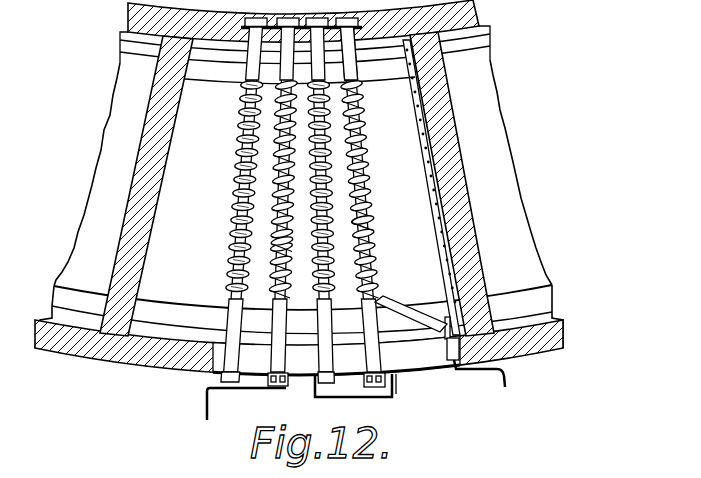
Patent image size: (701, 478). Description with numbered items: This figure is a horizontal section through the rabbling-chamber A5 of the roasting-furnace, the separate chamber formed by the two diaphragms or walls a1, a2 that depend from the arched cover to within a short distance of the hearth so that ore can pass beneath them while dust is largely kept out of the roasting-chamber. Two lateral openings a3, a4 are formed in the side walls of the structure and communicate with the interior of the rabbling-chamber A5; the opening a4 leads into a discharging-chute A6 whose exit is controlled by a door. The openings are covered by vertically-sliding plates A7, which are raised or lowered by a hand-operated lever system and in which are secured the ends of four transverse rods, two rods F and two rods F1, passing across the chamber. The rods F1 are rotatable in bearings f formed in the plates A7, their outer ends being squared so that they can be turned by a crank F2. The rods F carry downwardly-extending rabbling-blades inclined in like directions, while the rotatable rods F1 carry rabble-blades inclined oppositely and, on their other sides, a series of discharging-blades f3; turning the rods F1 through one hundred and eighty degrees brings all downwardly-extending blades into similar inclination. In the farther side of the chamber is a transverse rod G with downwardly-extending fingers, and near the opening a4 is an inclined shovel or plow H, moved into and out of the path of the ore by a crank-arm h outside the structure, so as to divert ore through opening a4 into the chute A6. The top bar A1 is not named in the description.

The diaphragm or wall a1 is at (152, 206).
The diaphragm or wall a2 is at (463, 174).
The lateral opening a3 is at (300, 41).
The lateral opening a4 is at (336, 355).
The top bar holding screw heads A1 is at (333, 29).
The rabbling-chamber A5 is at (366, 192).
The discharging-chute A6 is at (353, 385).
The vertically-sliding plate A7 is at (406, 384).
The rod F is at (231, 237).
The rotatable rod F1 is at (372, 253).
The crank F2 is at (240, 389).
The bearing f is at (280, 373).
The discharging-blade f3 is at (284, 254).
The transverse rod G is at (440, 232).
The inclined shovel or plow H is at (403, 302).
The crank-arm h is at (479, 380).